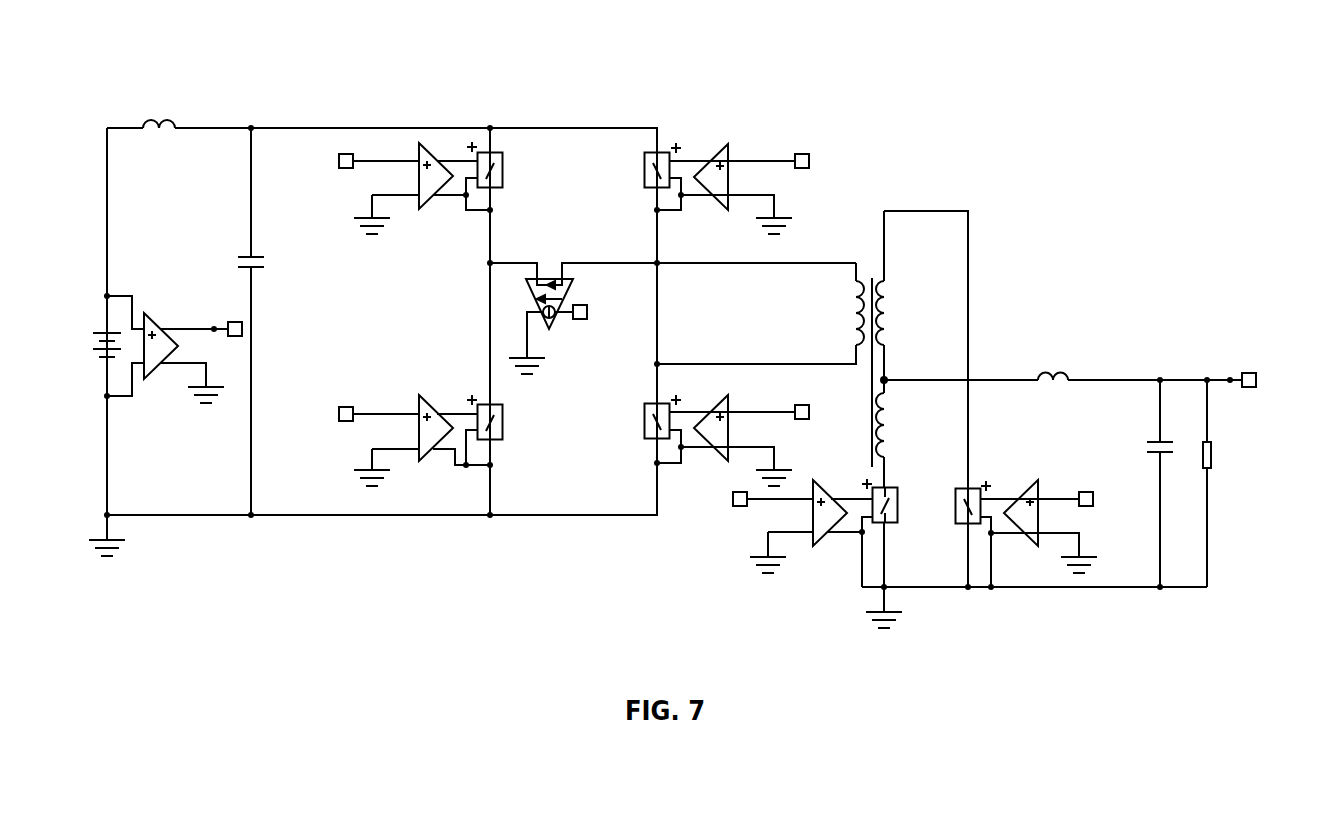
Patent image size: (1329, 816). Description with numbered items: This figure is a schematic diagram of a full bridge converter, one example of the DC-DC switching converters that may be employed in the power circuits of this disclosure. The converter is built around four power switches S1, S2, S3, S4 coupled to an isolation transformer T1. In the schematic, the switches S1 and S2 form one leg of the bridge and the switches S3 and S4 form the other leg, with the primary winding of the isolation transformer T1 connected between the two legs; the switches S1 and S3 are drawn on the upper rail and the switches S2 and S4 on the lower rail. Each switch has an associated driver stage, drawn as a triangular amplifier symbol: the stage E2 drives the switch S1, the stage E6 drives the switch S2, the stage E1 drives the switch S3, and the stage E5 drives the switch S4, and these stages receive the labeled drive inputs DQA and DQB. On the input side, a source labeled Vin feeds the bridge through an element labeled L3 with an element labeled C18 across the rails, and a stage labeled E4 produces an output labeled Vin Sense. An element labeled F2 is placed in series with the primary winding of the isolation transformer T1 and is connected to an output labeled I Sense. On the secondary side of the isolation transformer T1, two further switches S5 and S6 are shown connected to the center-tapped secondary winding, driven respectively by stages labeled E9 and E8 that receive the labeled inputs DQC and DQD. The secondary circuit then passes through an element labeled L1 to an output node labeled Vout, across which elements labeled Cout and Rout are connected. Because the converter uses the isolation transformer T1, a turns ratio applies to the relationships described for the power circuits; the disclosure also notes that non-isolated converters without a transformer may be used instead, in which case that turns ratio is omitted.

The input inductor L3 is at (159, 143).
The input capacitor C18 is at (272, 321).
The input voltage source Vin is at (89, 321).
The input voltage sense amplifier E4 is at (167, 357).
The input voltage sense output Vin Sense is at (286, 331).
The drive signal A input DQA is at (574, 287).
The drive signal B input DQB is at (574, 288).
The drive signal C input DQC is at (750, 507).
The drive signal D input DQD is at (1060, 501).
The switch driver amplifier E2 is at (423, 193).
The power switch S1 is at (498, 165).
The switch driver amplifier E6 is at (423, 445).
The power switch S2 is at (498, 417).
The switch driver amplifier E1 is at (723, 193).
The power switch S3 is at (649, 165).
The switch driver amplifier E5 is at (723, 440).
The power switch S4 is at (649, 417).
The current sensor F2 is at (671, 317).
The current sense output I Sense is at (604, 313).
The isolation transformer T1 is at (811, 399).
The output inductor L1 is at (1053, 396).
The output capacitor Cout is at (1135, 483).
The output load resistor Rout is at (1230, 483).
The output voltage terminal Vout is at (1271, 381).
The rectifier switch driver amplifier E9 is at (811, 533).
The synchronous rectifier switch S5 is at (893, 553).
The rectifier switch driver amplifier E8 is at (1038, 533).
The synchronous rectifier switch S6 is at (959, 502).